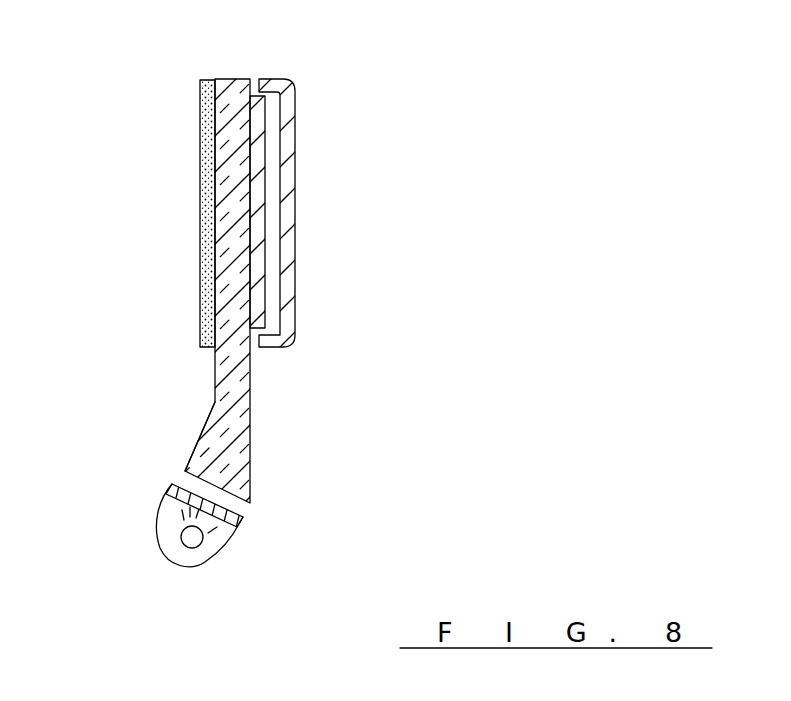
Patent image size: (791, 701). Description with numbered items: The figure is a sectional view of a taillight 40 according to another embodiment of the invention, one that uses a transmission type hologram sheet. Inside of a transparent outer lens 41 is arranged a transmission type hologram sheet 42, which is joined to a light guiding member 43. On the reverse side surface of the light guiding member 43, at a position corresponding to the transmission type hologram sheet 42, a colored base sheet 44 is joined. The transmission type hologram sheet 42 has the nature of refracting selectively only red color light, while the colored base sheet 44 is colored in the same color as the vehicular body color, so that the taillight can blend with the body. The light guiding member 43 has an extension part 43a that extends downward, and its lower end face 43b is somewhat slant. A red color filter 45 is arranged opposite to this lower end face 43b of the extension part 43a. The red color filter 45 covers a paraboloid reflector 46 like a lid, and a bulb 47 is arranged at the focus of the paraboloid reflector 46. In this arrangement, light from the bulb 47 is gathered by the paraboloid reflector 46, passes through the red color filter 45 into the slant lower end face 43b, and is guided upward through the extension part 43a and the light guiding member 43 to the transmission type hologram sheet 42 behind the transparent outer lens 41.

The taillight 40 is at (358, 145).
The transparent outer lens 41 is at (295, 269).
The transmission type hologram sheet 42 is at (263, 206).
The light guiding member 43 is at (230, 78).
The extension part 43a is at (192, 446).
The lower end face 43b is at (187, 478).
The colored base sheet 44 is at (200, 216).
The red color filter 45 is at (240, 530).
The paraboloid reflector 46 is at (207, 567).
The bulb 47 is at (181, 541).